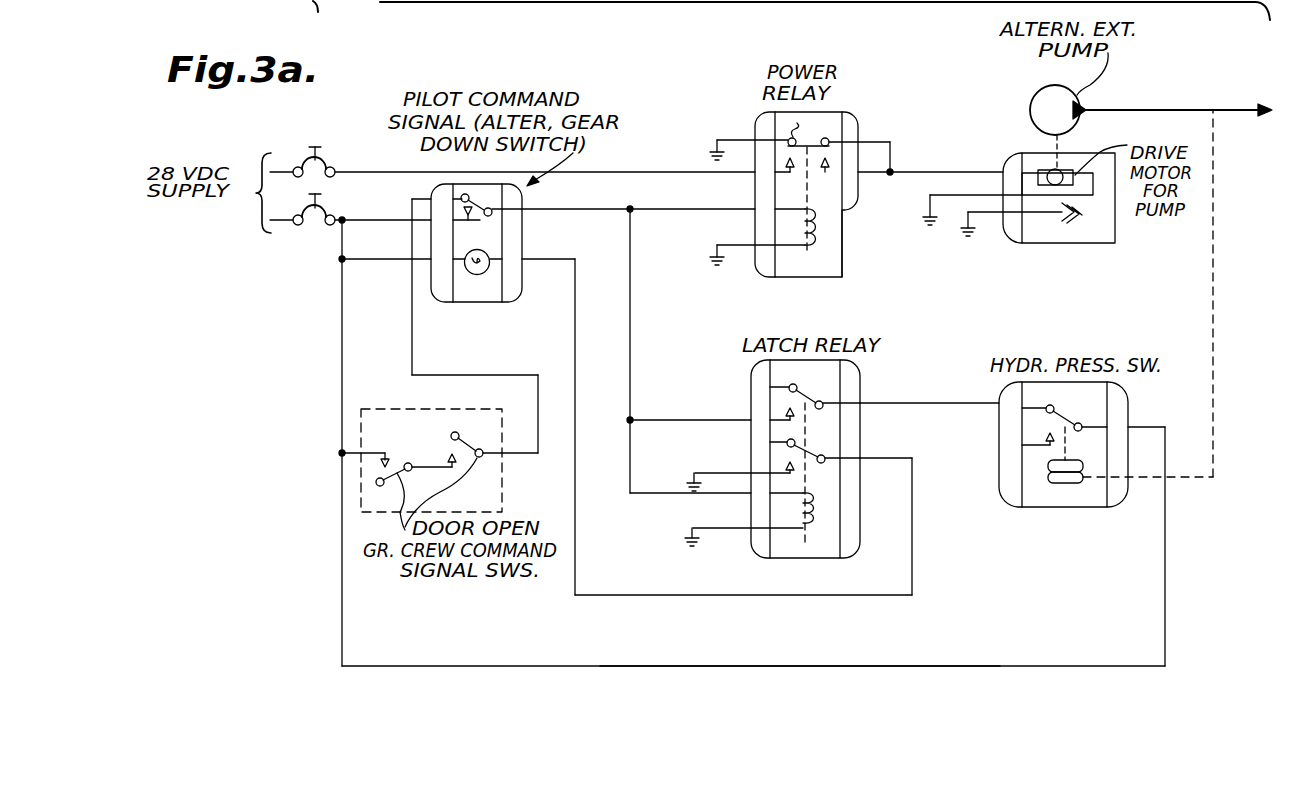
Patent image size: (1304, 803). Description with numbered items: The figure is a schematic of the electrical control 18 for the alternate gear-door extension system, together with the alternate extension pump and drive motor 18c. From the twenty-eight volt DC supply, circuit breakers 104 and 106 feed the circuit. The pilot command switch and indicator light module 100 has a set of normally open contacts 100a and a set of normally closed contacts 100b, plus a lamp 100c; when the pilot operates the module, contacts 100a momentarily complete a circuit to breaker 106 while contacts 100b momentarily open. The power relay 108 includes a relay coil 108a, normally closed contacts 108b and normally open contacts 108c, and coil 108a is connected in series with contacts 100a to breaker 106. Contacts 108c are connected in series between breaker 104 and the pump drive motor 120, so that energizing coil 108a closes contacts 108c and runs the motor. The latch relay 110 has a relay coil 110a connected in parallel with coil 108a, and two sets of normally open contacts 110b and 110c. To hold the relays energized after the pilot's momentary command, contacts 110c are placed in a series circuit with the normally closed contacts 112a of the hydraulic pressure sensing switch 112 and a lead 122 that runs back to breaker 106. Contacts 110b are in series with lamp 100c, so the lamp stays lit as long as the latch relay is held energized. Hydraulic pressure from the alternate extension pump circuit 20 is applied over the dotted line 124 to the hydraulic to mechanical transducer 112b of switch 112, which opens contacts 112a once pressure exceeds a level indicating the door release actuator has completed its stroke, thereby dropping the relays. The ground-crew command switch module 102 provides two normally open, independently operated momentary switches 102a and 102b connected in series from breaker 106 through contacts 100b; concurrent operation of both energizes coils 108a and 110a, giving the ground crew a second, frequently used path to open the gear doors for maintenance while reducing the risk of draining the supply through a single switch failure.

The control 18 is at (770, 6).
The alternate extension pump and drive motor 18c is at (1028, 138).
The alternate extension pump circuit 20 is at (1228, 110).
The pilot command switch and indicator light module 100 is at (494, 252).
The normally open contacts 100a is at (480, 220).
The normally closed contacts 100b is at (477, 203).
The lamp 100c is at (480, 275).
The ground-crew command switch module 102 is at (440, 436).
The momentary contact switch 102a is at (398, 458).
The momentary contact switch 102b is at (443, 440).
The circuit breaker 104 is at (346, 149).
The circuit breaker 106 is at (344, 197).
The power relay 108 is at (803, 185).
The relay coil 108a is at (820, 242).
The normally closed contacts 108b is at (778, 134).
The normally open contacts 108c is at (817, 175).
The latch relay 110 is at (802, 473).
The relay coil 110a is at (813, 530).
The normally open contacts 110b is at (795, 472).
The normally open contacts 110c is at (797, 417).
The hydraulic pressure sensing switch 112 is at (1087, 462).
The normally closed contacts 112a is at (1070, 422).
The hydraulic to mechanical transducer 112b is at (1070, 483).
The pump drive motor 120 is at (1038, 167).
The lead 122 is at (877, 665).
The dotted line 124 is at (1215, 267).